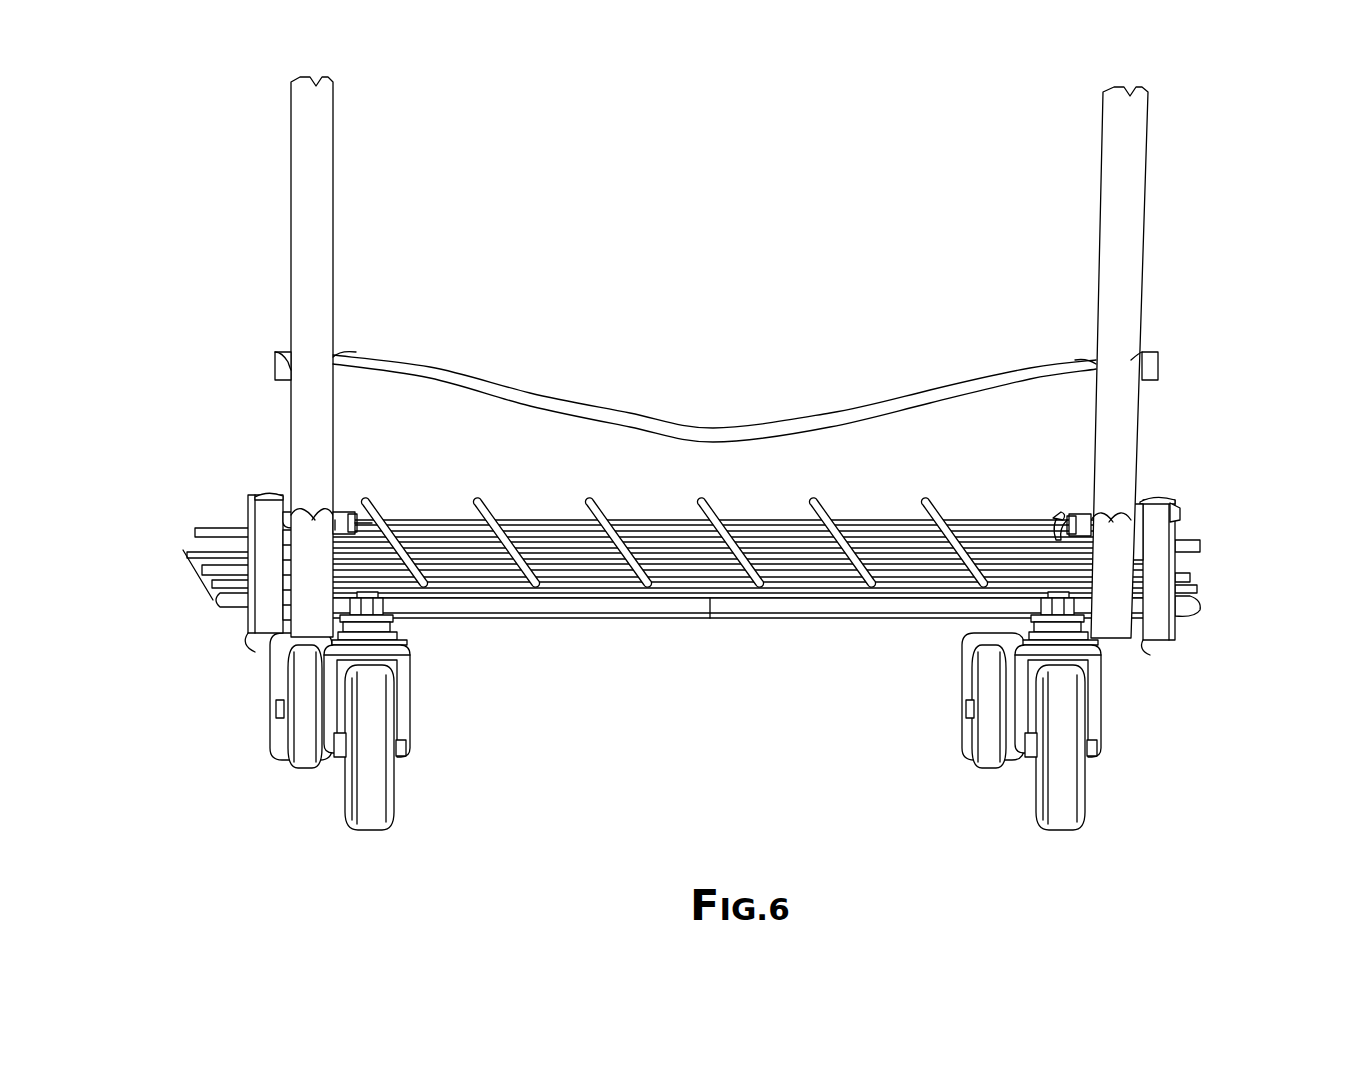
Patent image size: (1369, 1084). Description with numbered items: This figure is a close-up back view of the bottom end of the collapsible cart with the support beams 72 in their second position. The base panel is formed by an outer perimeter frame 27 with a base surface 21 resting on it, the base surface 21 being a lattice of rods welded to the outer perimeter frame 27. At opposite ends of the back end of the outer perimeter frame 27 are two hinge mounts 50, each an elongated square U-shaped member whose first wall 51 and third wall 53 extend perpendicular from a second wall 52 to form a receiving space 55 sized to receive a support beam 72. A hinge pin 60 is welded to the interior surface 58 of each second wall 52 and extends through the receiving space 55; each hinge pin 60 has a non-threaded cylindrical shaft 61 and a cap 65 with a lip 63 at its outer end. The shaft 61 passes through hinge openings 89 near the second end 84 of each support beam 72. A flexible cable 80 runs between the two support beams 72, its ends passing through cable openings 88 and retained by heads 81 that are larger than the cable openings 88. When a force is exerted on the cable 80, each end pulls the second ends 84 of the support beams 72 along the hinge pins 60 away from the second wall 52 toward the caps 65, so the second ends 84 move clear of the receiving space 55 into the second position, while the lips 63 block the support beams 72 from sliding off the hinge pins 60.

The base surface 21 is at (632, 535).
The outer perimeter frame 27 is at (655, 607).
The hinge mount 50 is at (200, 530).
The first wall 51 is at (270, 600).
The second wall 52 is at (250, 500).
The third wall 53 is at (270, 496).
The receiving space 55 is at (265, 632).
The interior surface 58 is at (262, 498).
The hinge pin 60 is at (344, 514).
The shaft 61 is at (350, 516).
The lip 63 is at (358, 522).
The cap 65 is at (355, 518).
The support beam 72 is at (318, 170).
The cable 80 is at (622, 417).
The head 81 is at (275, 366).
The second end 84 is at (236, 566).
The cable opening 88 is at (279, 352).
The hinge opening 89 is at (315, 515).